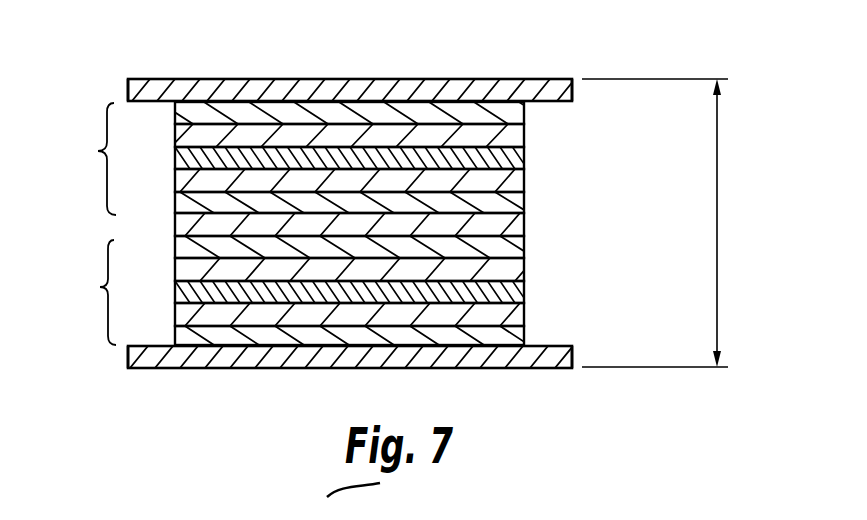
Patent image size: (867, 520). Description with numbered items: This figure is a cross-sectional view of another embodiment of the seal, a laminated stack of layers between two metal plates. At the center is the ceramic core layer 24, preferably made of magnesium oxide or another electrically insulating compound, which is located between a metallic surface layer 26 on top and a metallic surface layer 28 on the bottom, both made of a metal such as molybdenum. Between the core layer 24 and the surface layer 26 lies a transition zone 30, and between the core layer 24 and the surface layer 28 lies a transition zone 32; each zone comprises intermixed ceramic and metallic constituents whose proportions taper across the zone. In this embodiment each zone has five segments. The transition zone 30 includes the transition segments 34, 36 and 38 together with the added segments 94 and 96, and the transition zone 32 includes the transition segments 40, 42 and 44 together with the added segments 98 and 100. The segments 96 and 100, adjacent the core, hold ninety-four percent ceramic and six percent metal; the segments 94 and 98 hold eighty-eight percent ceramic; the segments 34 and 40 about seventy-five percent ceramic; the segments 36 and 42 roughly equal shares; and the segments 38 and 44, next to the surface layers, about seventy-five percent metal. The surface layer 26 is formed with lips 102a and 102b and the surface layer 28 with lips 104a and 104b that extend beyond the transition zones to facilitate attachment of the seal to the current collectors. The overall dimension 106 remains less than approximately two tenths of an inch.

The ceramic core layer 24 is at (175, 222).
The metallic surface layer 26 is at (241, 79).
The metallic surface layer 28 is at (258, 368).
The transition zone 30 is at (98, 150).
The transition zone 32 is at (100, 287).
The transition segment 34 is at (524, 155).
The transition segment 36 is at (175, 120).
The transition segment 38 is at (524, 135).
The transition segment 40 is at (524, 290).
The transition segment 42 is at (524, 308).
The transition segment 44 is at (175, 337).
The segment 94 is at (175, 180).
The segment 96 is at (524, 200).
The segment 98 is at (175, 270).
The segment 100 is at (524, 245).
The lip 102a is at (153, 79).
The lip 102b is at (559, 79).
The lip 104a is at (148, 369).
The lip 104b is at (560, 368).
The dimension 106 is at (717, 200).